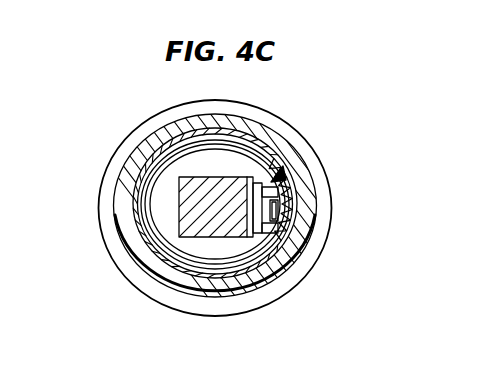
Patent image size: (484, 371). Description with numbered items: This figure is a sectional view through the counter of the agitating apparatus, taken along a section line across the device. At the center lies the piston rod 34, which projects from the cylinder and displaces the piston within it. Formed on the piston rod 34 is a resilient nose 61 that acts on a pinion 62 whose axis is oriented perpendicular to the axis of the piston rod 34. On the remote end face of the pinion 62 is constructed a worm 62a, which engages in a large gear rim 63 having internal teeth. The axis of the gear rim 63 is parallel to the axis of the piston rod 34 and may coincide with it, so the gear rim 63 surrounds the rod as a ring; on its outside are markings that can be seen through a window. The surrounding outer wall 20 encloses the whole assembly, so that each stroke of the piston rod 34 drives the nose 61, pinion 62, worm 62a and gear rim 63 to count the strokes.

The outer tube 20 is at (128, 172).
The piston rod 34 is at (188, 220).
The resilient nose 61 is at (281, 172).
The pinion 62 is at (262, 203).
The worm 62a is at (281, 229).
The gear rim 63 is at (279, 216).